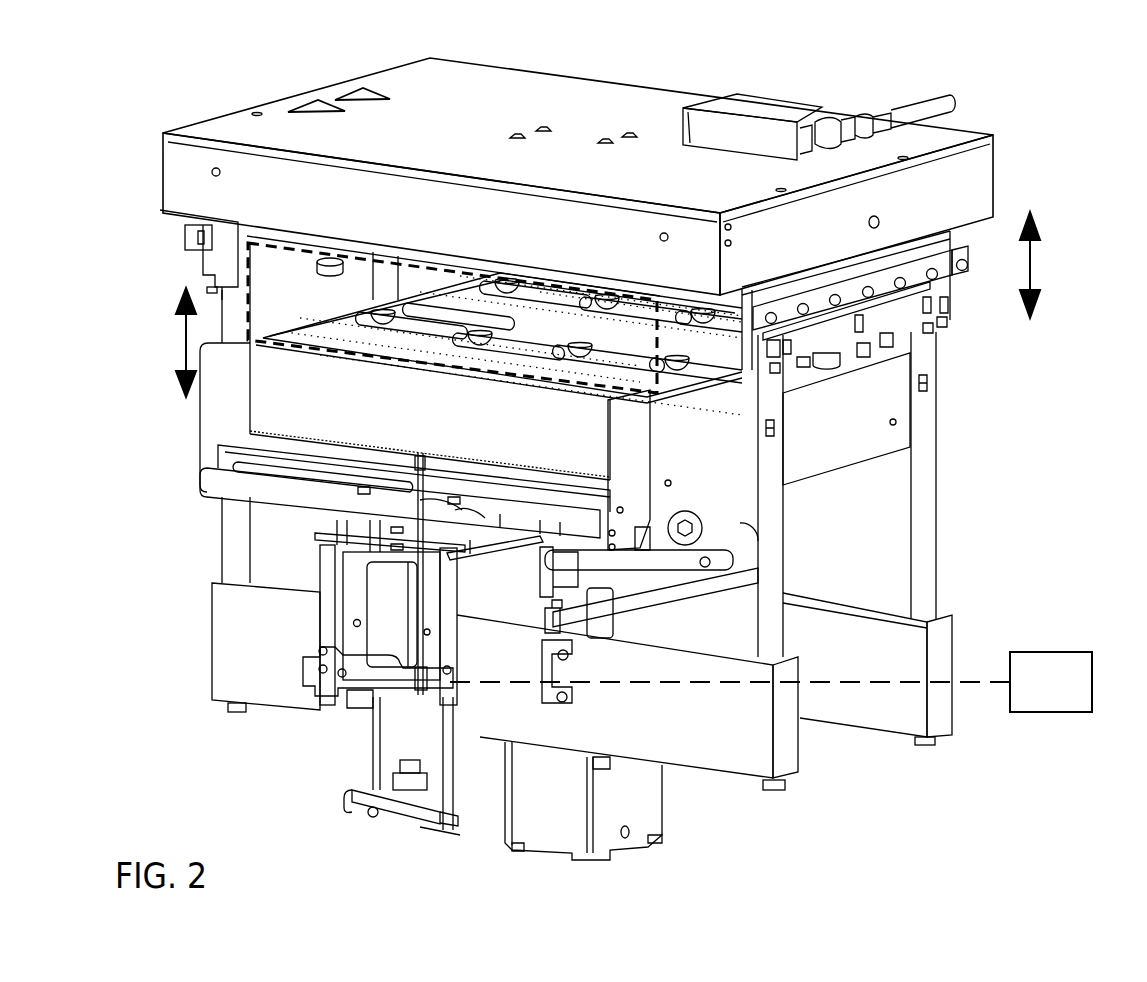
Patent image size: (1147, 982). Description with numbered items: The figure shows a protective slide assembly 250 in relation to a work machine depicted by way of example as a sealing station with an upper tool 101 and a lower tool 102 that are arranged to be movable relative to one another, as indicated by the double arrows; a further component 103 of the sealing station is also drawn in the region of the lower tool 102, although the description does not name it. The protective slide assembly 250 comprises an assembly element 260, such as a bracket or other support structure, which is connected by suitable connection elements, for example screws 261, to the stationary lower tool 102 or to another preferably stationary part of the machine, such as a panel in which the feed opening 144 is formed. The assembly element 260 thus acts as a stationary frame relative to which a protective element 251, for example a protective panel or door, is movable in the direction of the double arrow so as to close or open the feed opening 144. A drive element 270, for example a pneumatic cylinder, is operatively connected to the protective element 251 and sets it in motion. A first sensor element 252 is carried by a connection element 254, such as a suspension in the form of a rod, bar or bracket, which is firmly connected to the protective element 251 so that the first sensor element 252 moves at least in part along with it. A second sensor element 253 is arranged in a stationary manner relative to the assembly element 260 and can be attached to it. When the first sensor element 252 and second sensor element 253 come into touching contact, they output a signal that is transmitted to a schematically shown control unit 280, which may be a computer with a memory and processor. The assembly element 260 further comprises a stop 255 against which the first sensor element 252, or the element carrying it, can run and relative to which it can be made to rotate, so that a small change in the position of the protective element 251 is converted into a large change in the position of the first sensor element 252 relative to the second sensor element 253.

The upper tool 101 is at (975, 160).
The lower tool 102 is at (890, 407).
The tray 103 is at (718, 318).
The feed opening 144 is at (247, 272).
The protective slide assembly 250 is at (463, 678).
The protective element 251 is at (260, 413).
The first sensor element 252 is at (420, 827).
The second sensor element 253 is at (405, 760).
The connection element 254 is at (377, 768).
The stop 255 is at (350, 705).
The assembly element 260 is at (528, 705).
The screws 261 is at (570, 698).
The drive element 270 is at (423, 770).
The control unit 280 is at (1073, 697).